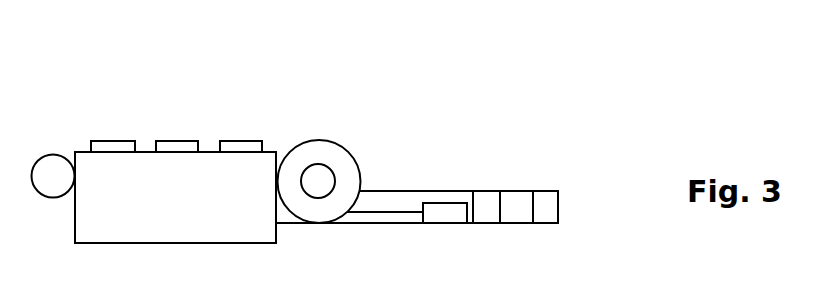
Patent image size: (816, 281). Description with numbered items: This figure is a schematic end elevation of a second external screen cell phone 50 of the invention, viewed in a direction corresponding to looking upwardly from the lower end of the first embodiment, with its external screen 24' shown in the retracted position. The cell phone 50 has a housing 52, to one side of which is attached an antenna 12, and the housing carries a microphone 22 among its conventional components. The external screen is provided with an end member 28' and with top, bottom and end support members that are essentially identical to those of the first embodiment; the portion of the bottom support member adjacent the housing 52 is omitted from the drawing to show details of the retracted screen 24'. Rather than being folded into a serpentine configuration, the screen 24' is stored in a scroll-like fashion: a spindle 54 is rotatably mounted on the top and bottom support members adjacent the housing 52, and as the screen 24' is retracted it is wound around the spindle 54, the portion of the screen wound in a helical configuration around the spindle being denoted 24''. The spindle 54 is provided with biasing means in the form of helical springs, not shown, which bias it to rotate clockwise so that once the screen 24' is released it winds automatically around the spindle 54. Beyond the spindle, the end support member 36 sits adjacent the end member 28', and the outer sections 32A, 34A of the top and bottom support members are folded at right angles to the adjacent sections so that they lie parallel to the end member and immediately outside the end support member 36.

The antenna 12 is at (53, 175).
The microphone 22 is at (174, 147).
The second external screen cell phone 50 is at (183, 141).
The housing 52 is at (175, 197).
The spindle 54 is at (316, 178).
The wound portion of the screen 24'' is at (338, 158).
The external screen 24' is at (417, 175).
The end member 28' is at (450, 175).
The end support member 36 is at (486, 208).
The outer section of the top support member 32A is at (517, 210).
The outer section of the bottom support member 34A is at (547, 210).